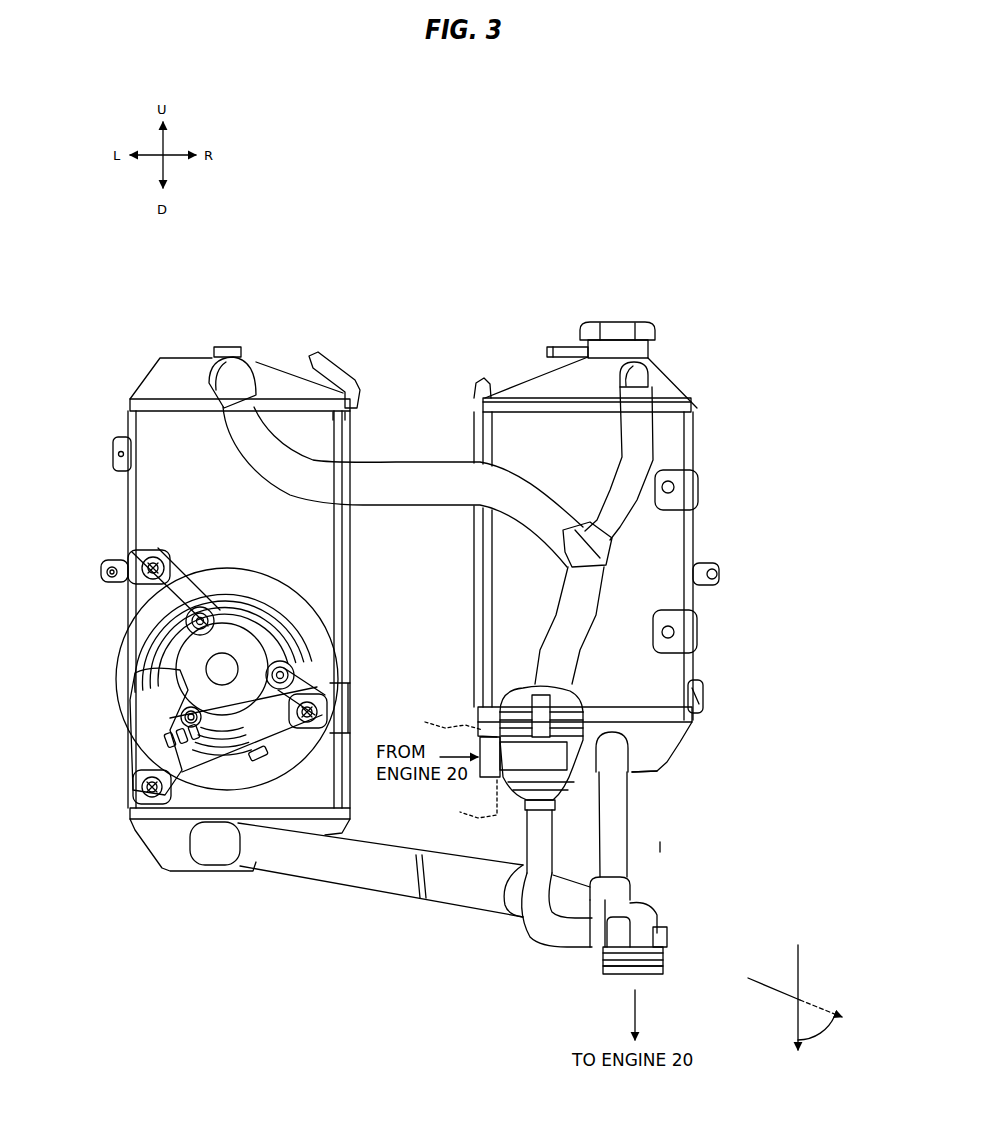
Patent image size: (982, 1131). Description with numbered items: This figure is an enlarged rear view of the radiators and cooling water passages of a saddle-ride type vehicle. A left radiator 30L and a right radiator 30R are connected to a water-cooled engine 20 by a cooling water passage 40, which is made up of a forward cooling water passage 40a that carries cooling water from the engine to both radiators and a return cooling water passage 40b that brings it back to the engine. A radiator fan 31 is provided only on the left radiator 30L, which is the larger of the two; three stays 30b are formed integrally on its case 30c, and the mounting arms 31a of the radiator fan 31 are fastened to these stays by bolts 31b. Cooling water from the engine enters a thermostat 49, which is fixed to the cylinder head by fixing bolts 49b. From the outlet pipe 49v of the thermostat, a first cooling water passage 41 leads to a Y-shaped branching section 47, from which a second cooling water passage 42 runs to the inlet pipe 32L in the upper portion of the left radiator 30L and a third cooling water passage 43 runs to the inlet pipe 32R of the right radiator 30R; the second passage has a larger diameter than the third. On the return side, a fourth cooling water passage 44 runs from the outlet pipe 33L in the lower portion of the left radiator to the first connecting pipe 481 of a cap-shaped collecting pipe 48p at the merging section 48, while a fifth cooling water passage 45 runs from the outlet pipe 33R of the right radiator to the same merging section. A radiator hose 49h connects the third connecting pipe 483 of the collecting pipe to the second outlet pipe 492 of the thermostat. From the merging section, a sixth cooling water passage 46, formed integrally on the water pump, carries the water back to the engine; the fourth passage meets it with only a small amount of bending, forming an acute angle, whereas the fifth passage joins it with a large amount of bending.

The water-cooled engine 20 is at (470, 812).
The left radiator 30L is at (140, 385).
The right radiator 30R is at (697, 405).
The stays 30b is at (132, 574).
The case 30c is at (126, 500).
The radiator fan 31 is at (125, 672).
The mounting arms 31a is at (183, 563).
The bolts 31b is at (145, 560).
The inlet pipe 32L is at (232, 372).
The inlet pipe 32R is at (640, 373).
The outlet pipe 33L is at (208, 840).
The outlet pipe 33R is at (615, 745).
The cooling water passage 40 is at (643, 578).
The forward cooling water passage 40a is at (625, 624).
The return cooling water passage 40b is at (668, 847).
The first cooling water passage 41 is at (598, 600).
The second cooling water passage 42 is at (416, 474).
The third cooling water passage 43 is at (640, 440).
The fourth cooling water passage 44 is at (366, 872).
The fifth cooling water passage 45 is at (620, 815).
The sixth cooling water passage 46 is at (648, 977).
The branching section 47 is at (603, 558).
The merging section 48 is at (652, 915).
The first connecting pipe 481 is at (630, 895).
The third connecting pipe 483 is at (600, 950).
The collecting pipe 48p is at (657, 930).
The thermostat 49 is at (513, 700).
The fixing bolts 49b is at (662, 775).
The radiator hose 49h is at (524, 930).
The outlet pipe 49v is at (700, 690).
The second outlet pipe 492 is at (527, 812).